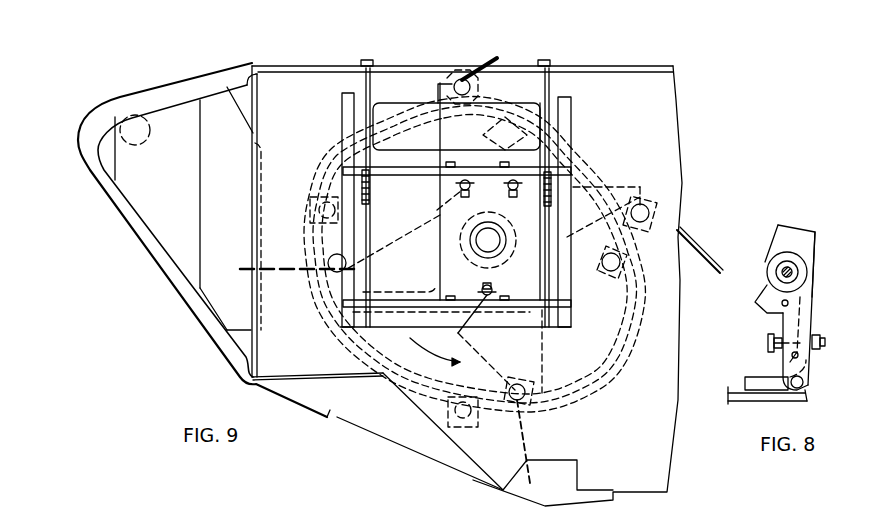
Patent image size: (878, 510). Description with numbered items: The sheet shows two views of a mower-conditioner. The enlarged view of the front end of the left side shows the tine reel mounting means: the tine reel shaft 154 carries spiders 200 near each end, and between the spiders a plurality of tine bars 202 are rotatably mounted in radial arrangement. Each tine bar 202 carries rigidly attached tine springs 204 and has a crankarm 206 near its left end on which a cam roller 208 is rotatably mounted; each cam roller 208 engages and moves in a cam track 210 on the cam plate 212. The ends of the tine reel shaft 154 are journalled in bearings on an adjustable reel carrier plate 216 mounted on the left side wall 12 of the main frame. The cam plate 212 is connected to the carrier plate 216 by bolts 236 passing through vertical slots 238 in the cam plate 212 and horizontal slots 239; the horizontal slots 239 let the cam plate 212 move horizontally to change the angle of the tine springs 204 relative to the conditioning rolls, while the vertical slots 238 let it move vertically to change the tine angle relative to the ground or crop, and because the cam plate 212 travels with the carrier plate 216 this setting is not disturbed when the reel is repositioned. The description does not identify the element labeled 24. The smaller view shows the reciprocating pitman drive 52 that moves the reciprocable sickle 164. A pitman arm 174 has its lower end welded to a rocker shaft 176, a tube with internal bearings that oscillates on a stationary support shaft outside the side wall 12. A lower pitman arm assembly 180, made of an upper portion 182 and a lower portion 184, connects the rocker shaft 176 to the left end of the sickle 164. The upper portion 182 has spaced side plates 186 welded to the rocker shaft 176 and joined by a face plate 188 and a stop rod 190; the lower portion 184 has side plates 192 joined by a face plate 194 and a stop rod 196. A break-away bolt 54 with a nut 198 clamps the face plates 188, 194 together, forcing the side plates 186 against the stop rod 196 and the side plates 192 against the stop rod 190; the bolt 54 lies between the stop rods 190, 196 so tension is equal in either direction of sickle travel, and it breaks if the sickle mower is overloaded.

In FIG. 9, the side wall 12 is at (302, 125).
In FIG. 8, the base plate 24 is at (742, 499).
In FIG. 8, the pitman drive 52 is at (825, 278).
In FIG. 8, the break-away bolt 54 is at (768, 340).
In FIG. 9, the tine reel shaft 154 is at (492, 248).
In FIG. 8, the reciprocable sickle 164 is at (767, 389).
In FIG. 8, the pitman arm 174 is at (814, 246).
In FIG. 8, the rocker shaft 176 is at (771, 261).
In FIG. 8, the lower pitman arm assembly 180 is at (815, 316).
In FIG. 8, the upper portion 182 is at (755, 299).
In FIG. 8, the lower portion 184 is at (808, 373).
In FIG. 8, the side plates 186 is at (811, 289).
In FIG. 8, the face plate 188 is at (772, 347).
In FIG. 8, the stop rod 190 is at (782, 304).
In FIG. 8, the side plates 192 is at (812, 358).
In FIG. 8, the face plate 194 is at (820, 336).
In FIG. 8, the stop rod 196 is at (790, 360).
In FIG. 8, the nut 198 is at (824, 345).
In FIG. 9, the spiders 200 is at (544, 354).
In FIG. 9, the tine bars 202 is at (473, 88).
In FIG. 9, the tine springs 204 is at (280, 267).
In FIG. 9, the crankarm 206 is at (470, 114).
In FIG. 9, the cam roller 208 is at (561, 112).
In FIG. 9, the cam track 210 is at (334, 343).
In FIG. 9, the cam plate 212 is at (313, 323).
In FIG. 9, the reel carrier plate 216 is at (500, 205).
In FIG. 9, the bolts 236 is at (469, 167).
In FIG. 9, the vertical slots 238 is at (485, 286).
In FIG. 9, the horizontal slots 239 is at (459, 186).